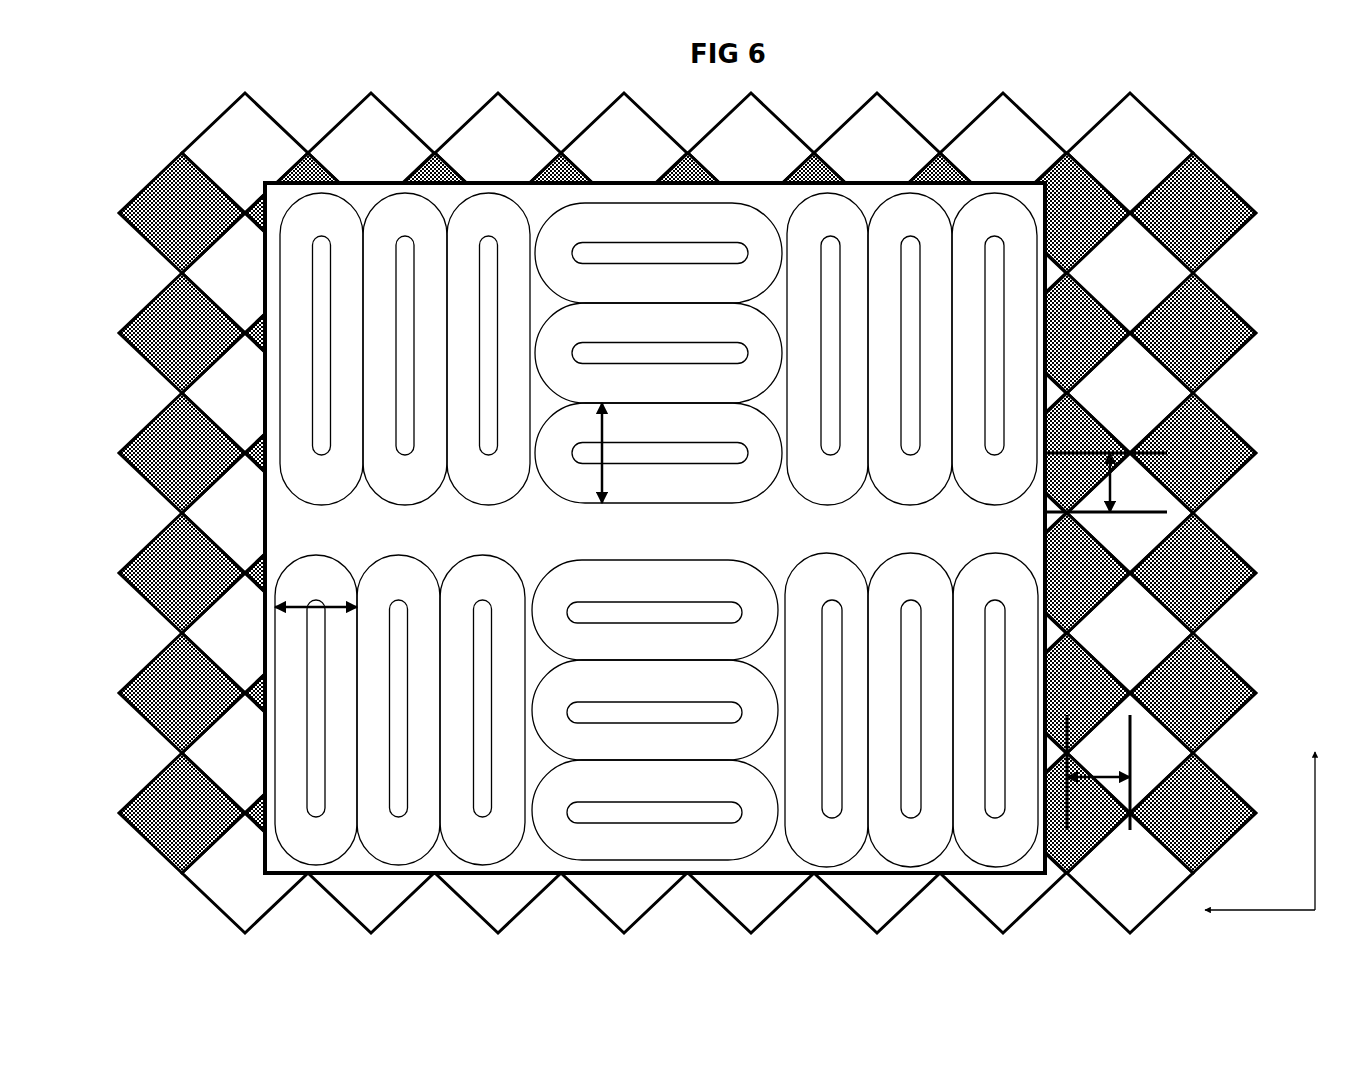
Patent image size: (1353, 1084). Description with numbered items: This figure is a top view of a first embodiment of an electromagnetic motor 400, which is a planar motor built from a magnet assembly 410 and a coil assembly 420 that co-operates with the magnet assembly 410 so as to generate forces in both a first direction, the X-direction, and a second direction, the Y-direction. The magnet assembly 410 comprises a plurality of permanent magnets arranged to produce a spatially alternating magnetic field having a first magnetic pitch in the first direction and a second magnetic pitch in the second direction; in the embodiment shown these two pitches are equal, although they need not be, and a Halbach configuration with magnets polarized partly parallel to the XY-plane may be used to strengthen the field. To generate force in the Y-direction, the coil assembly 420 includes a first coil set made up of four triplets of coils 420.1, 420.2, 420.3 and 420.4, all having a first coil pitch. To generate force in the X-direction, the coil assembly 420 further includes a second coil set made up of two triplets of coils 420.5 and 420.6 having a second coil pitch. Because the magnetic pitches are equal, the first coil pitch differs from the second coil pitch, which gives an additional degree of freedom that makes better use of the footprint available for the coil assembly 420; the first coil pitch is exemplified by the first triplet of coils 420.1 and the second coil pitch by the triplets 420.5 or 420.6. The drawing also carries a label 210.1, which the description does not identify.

The electromagnetic motor 400 is at (1257, 124).
The magnet assembly 410 is at (178, 136).
The coil assembly 420 is at (292, 198).
The first triplet of coils 420.1 is at (303, 305).
The triplet of coils 420.2 is at (817, 485).
The triplet of coils 420.3 is at (892, 588).
The triplet of coils 420.4 is at (302, 752).
The triplet of coils 420.5 is at (625, 493).
The triplet of coils 420.6 is at (563, 582).
The magnet 210.1 is at (1138, 280).